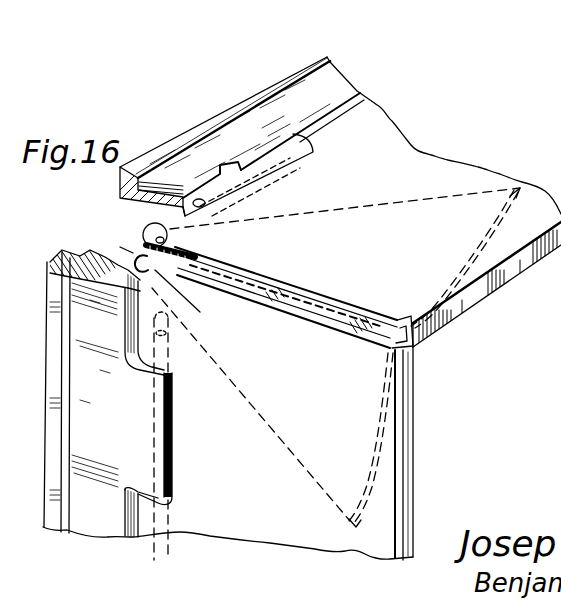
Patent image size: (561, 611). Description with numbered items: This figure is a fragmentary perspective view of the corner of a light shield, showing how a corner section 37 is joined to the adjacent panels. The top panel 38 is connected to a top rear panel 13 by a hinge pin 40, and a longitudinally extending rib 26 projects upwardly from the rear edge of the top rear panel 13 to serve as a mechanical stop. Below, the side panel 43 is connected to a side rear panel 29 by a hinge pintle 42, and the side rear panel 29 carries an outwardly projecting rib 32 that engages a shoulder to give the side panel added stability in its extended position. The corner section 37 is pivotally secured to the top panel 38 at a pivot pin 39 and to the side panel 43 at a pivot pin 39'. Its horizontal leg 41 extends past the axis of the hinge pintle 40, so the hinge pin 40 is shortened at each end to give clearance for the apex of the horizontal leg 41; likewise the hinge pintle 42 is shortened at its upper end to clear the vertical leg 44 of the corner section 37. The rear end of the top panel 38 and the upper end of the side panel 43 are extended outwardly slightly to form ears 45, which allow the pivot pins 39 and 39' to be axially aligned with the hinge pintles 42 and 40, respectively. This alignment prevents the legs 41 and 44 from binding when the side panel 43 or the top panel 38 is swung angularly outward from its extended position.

The top rear panel 13 is at (341, 88).
The rib 26 is at (218, 118).
The side rear panel 29 is at (88, 513).
The rib 32 is at (46, 277).
The corner section 37 is at (381, 319).
The top panel 38 is at (501, 272).
The pivot pin 39 is at (134, 212).
The pivot pin 39' is at (193, 301).
The hinge pin 40 is at (339, 124).
The horizontal leg 41 is at (350, 222).
The hinge pintle 42 is at (170, 442).
The side panel 43 is at (468, 461).
The vertical leg 44 is at (299, 446).
The ears 45 is at (140, 243).